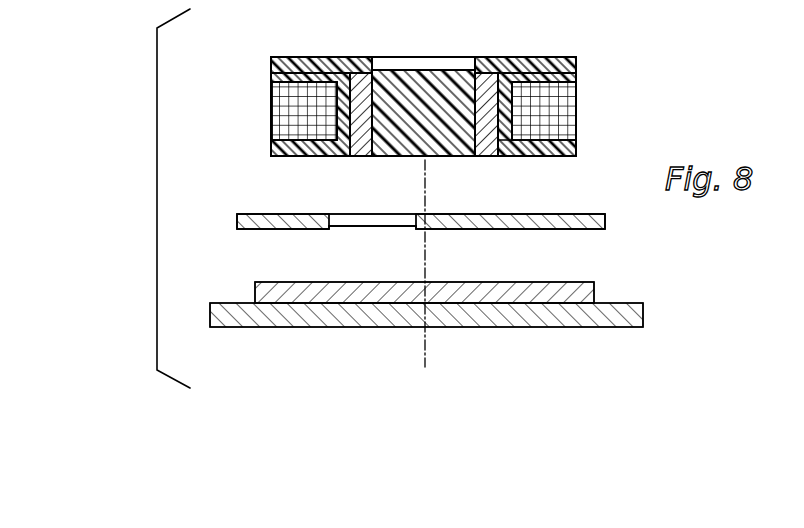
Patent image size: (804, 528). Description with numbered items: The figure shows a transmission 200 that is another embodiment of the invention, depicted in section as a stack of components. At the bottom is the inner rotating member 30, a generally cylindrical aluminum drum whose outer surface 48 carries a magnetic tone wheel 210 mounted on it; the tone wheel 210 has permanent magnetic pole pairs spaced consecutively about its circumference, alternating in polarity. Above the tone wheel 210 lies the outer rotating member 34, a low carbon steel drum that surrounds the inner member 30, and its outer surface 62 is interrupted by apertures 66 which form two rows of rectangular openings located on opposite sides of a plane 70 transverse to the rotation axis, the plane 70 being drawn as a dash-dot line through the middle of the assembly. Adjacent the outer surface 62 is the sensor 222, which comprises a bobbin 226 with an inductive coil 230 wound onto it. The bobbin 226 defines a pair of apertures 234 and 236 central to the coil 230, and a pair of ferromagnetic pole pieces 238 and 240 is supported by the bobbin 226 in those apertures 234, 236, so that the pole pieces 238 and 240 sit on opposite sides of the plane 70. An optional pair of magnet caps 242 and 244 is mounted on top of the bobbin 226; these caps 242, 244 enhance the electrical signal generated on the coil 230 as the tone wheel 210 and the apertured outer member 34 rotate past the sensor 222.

The transmission 200 is at (128, 187).
The sensor 222 is at (450, 110).
The magnet cap 242 is at (316, 57).
The magnet cap 244 is at (505, 57).
The inductive coil 230 is at (572, 100).
The bobbin 226 is at (568, 147).
The aperture 236 is at (500, 150).
The pole piece 240 is at (490, 145).
The pole piece 238 is at (345, 153).
The aperture 234 is at (362, 155).
The outer surface 62 is at (257, 214).
The aperture 66 is at (333, 222).
The outer rotating member 34 is at (597, 213).
The magnetic tone wheel 210 is at (590, 282).
The outer surface 48 is at (623, 303).
The inner rotating member 30 is at (622, 328).
The plane 70 is at (428, 357).